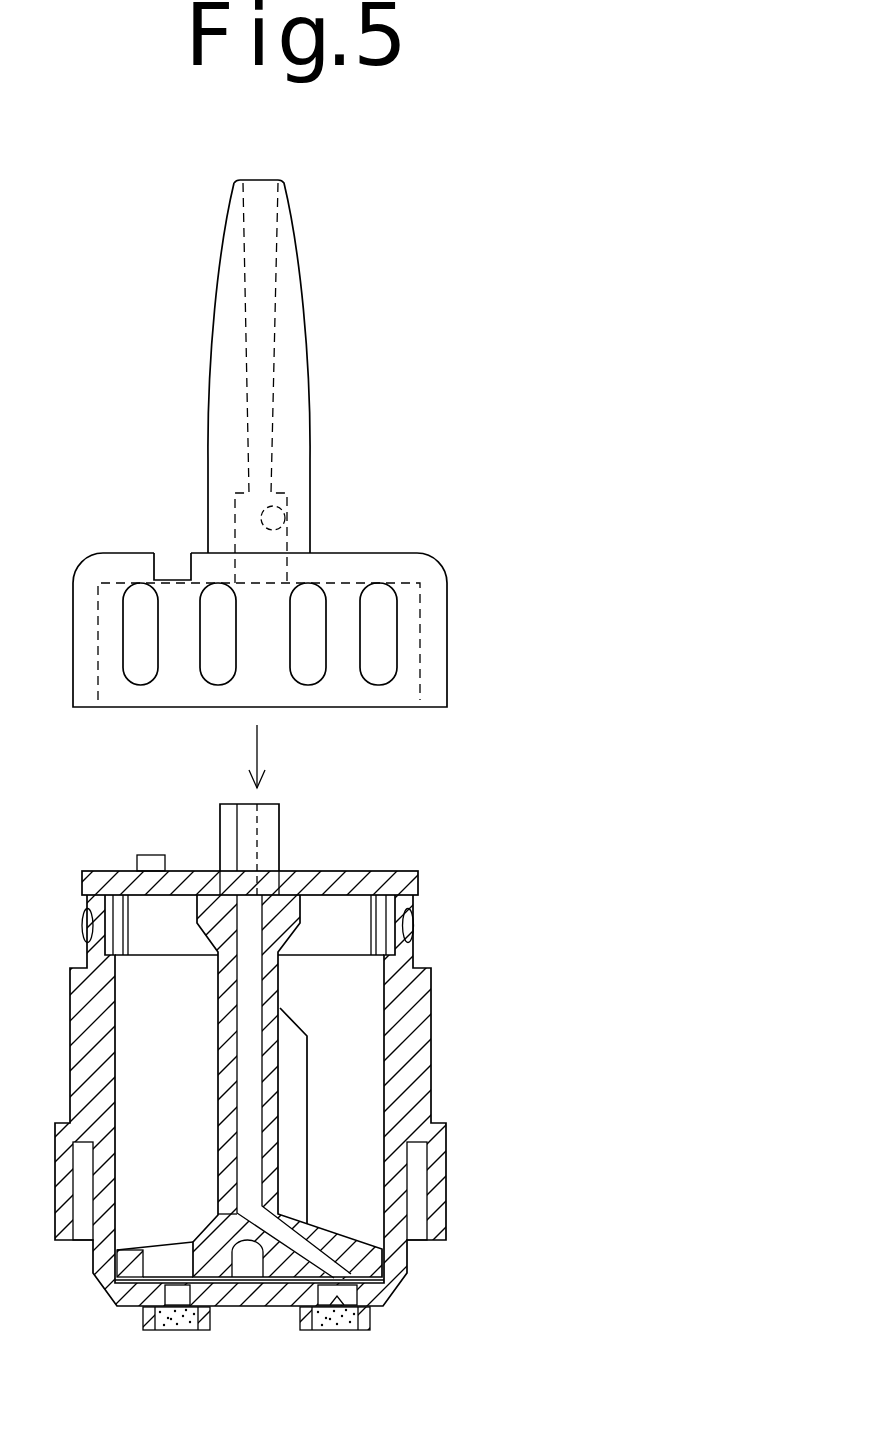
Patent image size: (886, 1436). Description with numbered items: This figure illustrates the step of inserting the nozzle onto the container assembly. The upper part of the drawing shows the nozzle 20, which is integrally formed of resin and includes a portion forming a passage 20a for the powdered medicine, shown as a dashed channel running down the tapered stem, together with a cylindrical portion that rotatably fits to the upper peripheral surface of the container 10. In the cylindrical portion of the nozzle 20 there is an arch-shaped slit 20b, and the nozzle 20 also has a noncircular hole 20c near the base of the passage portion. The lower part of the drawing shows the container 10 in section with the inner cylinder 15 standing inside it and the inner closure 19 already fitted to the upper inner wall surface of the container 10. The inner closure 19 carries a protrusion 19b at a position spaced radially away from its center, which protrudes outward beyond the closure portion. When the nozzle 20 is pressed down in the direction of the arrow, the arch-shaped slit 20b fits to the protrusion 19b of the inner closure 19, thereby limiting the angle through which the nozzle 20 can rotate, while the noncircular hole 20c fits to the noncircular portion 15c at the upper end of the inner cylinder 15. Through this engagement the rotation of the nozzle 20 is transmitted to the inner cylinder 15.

The container 10 is at (447, 961).
The inner cylinder 15 is at (292, 1006).
The noncircular portion 15c is at (273, 825).
The inner closure 19 is at (382, 862).
The protrusion 19b is at (152, 855).
The nozzle 20 is at (324, 319).
The passage 20a is at (258, 450).
The arch-shaped slit 20b is at (175, 558).
The noncircular hole 20c is at (283, 508).